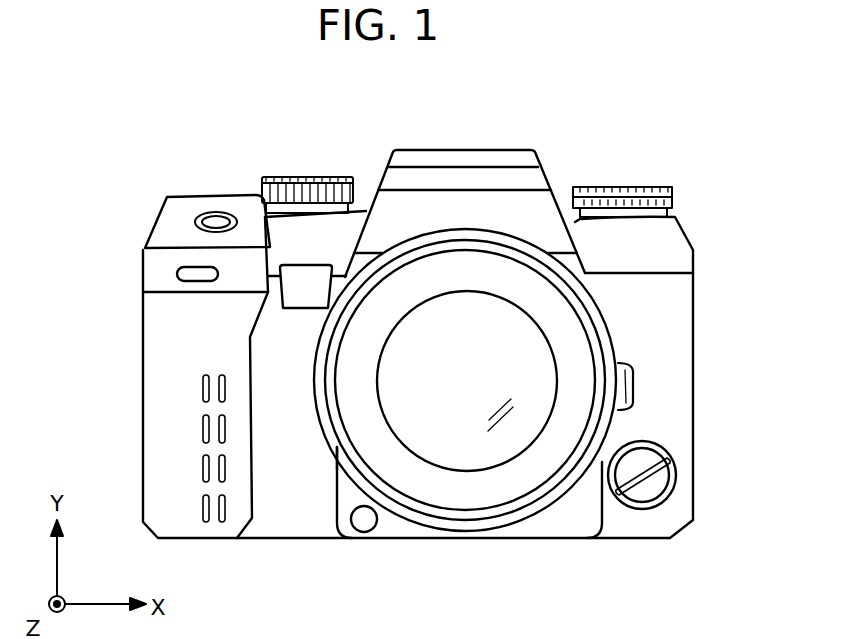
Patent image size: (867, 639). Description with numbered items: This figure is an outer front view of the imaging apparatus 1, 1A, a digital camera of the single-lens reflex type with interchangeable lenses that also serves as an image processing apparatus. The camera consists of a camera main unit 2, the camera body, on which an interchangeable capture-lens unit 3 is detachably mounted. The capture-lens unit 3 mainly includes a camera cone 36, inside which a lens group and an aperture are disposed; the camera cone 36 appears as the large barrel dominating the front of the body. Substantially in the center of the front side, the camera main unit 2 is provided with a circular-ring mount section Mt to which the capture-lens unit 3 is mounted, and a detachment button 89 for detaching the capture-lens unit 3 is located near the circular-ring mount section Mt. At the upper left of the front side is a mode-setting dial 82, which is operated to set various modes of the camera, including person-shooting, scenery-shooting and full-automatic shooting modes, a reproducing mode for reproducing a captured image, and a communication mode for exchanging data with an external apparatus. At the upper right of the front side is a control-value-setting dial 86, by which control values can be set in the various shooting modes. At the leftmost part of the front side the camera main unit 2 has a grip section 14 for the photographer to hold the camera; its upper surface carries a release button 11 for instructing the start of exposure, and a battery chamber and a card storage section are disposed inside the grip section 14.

The imaging apparatus 1 is at (748, 77).
The imaging apparatus 1A is at (423, 363).
The camera main unit 2 is at (693, 348).
The capture-lens unit 3 is at (518, 493).
The release button 11 is at (216, 216).
The grip section 14 is at (143, 339).
The camera cone 36 is at (603, 300).
The mode-setting dial 82 is at (307, 177).
The control-value-setting dial 86 is at (623, 187).
The detachment button 89 is at (633, 398).
The circular-ring mount section Mt is at (320, 428).